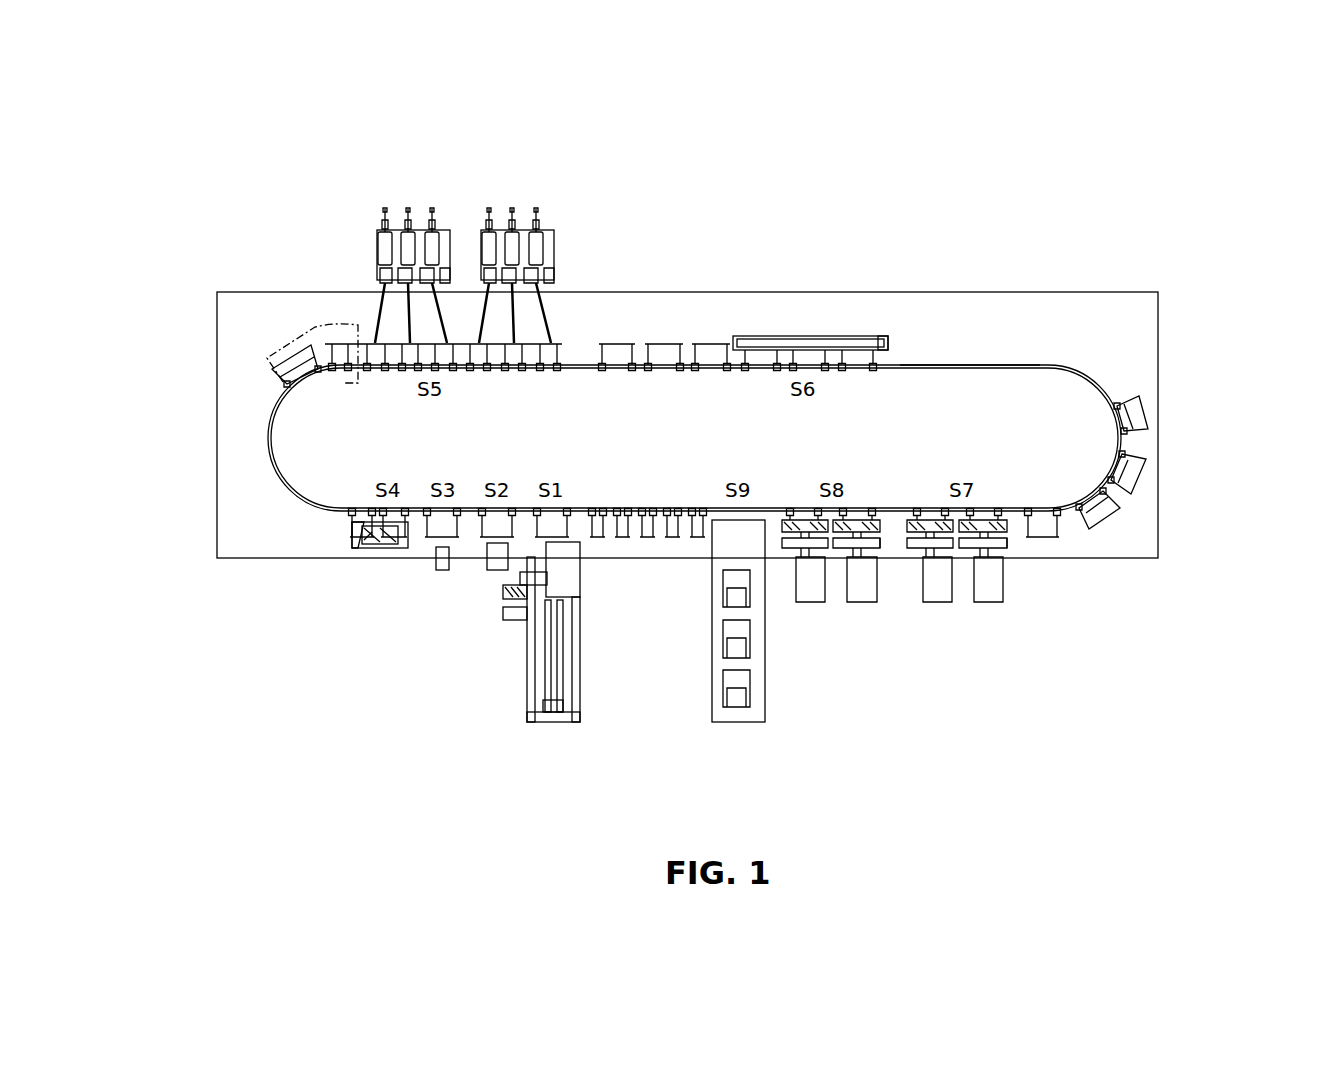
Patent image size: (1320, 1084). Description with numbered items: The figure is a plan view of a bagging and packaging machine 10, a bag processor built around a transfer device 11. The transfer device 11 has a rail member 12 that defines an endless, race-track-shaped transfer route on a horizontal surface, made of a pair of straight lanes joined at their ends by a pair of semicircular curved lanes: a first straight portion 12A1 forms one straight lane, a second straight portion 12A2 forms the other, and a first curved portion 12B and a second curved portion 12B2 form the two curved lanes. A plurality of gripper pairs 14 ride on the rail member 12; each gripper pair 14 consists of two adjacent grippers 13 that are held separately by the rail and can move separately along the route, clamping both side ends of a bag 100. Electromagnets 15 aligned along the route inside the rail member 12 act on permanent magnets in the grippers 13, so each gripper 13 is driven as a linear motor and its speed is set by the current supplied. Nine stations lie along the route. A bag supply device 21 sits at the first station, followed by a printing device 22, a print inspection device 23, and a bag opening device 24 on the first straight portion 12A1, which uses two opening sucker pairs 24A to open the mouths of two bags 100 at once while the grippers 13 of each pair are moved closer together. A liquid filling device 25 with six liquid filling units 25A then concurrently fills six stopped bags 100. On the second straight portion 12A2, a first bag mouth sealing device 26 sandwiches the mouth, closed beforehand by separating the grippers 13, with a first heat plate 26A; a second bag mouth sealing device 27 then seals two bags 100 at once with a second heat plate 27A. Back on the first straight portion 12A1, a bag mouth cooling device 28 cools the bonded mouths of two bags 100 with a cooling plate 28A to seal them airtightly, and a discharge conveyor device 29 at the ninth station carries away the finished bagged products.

The bagging and packaging machine 10 is at (146, 156).
The transfer device 11 is at (282, 500).
The rail member 12 is at (691, 376).
The first straight portion 12A1 is at (763, 510).
The second straight portion 12A2 is at (930, 364).
The first curved portion 12B is at (267, 450).
The second curved portion 12B2 is at (1100, 384).
The gripper 13 is at (312, 375).
The gripper pair 14 is at (302, 230).
The electromagnet 15 is at (990, 364).
The bag supply device 21 is at (525, 655).
The printing device 22 is at (495, 565).
The print inspection device 23 is at (437, 560).
The bag opening device 24 is at (320, 594).
The opening sucker pair 24A is at (350, 535).
The liquid filling device 25 is at (464, 229).
The liquid filling unit 25A is at (536, 207).
The first bag mouth sealing device 26 is at (826, 284).
The first heat plate 26A is at (885, 336).
The second bag mouth sealing device 27 is at (1008, 587).
The second heat plate 27A is at (1007, 545).
The bag mouth cooling device 28 is at (858, 617).
The cooling plate 28A is at (880, 545).
The discharge conveyor device 29 is at (772, 708).
The bag 100 is at (712, 343).